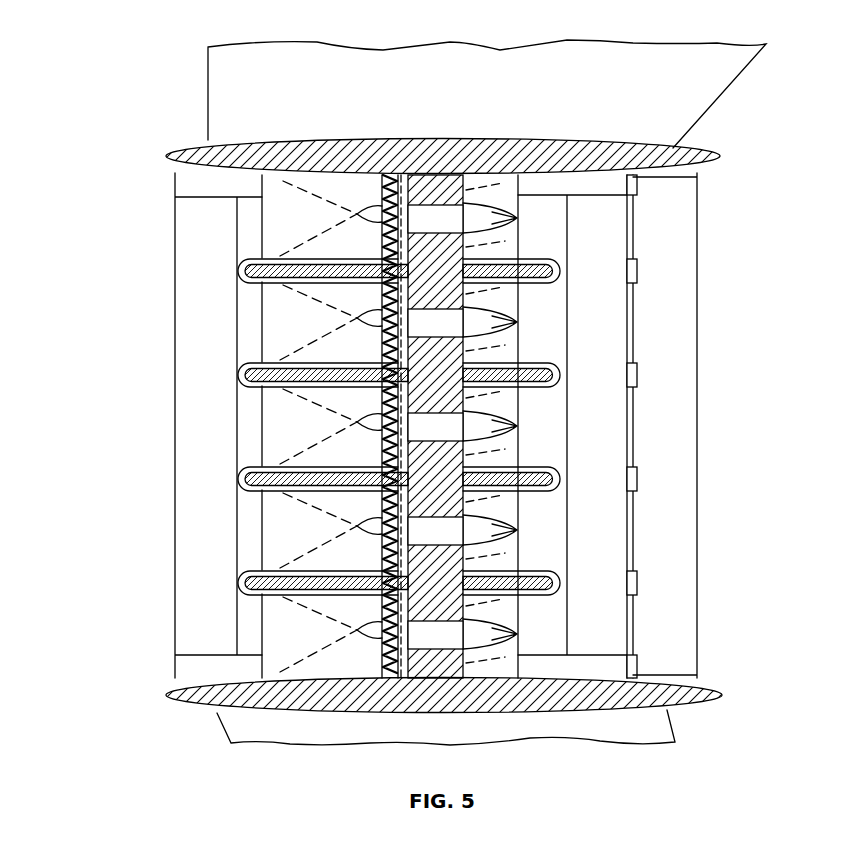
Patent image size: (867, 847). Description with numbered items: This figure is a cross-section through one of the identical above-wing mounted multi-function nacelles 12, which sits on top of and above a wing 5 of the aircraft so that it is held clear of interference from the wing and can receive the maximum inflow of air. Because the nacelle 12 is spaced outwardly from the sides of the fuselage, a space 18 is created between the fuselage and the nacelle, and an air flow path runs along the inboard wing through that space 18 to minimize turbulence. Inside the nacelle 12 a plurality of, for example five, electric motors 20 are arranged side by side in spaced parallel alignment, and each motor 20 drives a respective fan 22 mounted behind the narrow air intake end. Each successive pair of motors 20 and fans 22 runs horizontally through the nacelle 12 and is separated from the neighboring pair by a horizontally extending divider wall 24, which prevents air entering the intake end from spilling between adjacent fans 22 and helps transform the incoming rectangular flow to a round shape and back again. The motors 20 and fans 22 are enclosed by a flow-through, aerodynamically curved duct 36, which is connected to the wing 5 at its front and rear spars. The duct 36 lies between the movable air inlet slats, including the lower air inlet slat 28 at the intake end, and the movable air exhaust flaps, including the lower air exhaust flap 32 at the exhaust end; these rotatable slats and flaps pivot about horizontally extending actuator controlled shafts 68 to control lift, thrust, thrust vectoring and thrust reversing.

The wing 5 is at (577, 735).
The multi-function nacelle 12 is at (153, 296).
The space 18 is at (590, 63).
The electric motor 20 is at (517, 218).
The fan 22 is at (382, 191).
The divider wall 24 is at (536, 262).
The lower air inlet slat 28 is at (203, 447).
The lower air exhaust flap 32 is at (670, 257).
The flow-through duct 36 is at (337, 705).
The actuator controlled shaft 68 is at (632, 337).